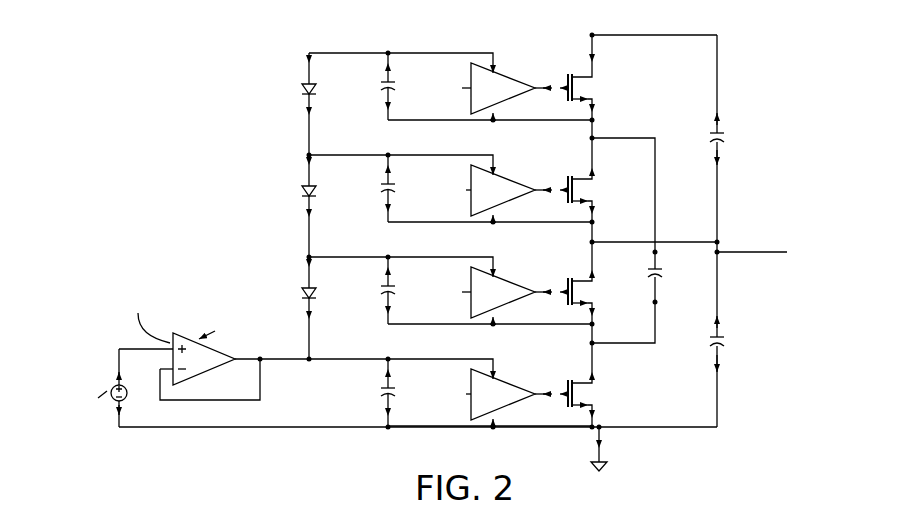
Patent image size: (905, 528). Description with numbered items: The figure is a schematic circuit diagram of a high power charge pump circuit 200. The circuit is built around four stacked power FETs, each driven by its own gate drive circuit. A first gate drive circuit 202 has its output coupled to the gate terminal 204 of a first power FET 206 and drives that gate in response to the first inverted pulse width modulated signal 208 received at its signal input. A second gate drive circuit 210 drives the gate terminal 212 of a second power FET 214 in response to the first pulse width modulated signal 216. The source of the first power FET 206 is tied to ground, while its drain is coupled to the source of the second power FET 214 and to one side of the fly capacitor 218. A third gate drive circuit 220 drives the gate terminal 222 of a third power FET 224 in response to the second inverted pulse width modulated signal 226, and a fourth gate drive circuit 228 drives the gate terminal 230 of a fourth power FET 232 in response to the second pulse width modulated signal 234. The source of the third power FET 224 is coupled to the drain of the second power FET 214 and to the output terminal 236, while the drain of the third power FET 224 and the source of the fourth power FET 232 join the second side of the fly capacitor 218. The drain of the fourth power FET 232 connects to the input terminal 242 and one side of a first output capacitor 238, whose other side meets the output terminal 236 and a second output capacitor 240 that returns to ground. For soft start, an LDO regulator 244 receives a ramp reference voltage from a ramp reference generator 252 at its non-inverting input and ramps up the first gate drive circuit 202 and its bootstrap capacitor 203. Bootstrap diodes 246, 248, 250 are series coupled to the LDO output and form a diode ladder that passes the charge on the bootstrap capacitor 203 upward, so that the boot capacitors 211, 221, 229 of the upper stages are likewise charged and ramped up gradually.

The high power charge pump circuit 200 is at (188, 52).
The first gate drive circuit 202 is at (500, 377).
The bootstrap capacitor 203 is at (415, 378).
The gate terminal 204 is at (553, 371).
The first power FET 206 is at (615, 384).
The first PWMN signal 208 is at (489, 408).
The second gate drive circuit 210 is at (498, 275).
The boot capacitor 211 is at (415, 276).
The gate terminal 212 is at (553, 269).
The second power FET 214 is at (613, 283).
The first PWM signal 216 is at (490, 306).
The fly capacitor 218 is at (658, 278).
The third gate drive circuit 220 is at (500, 173).
The boot capacitor 221 is at (415, 174).
The gate terminal 222 is at (553, 167).
The third power FET 224 is at (613, 180).
The second PWMN signal 226 is at (490, 204).
The fourth gate drive circuit 228 is at (500, 82).
The boot capacitor 229 is at (390, 77).
The gate terminal 230 is at (563, 80).
The fourth power FET 232 is at (597, 77).
The second PWM signal 234 is at (437, 95).
The output terminal 236 is at (720, 254).
The first output capacitor 238 is at (718, 128).
The second output capacitor 240 is at (720, 338).
The input terminal 242 is at (597, 35).
The LDO regulator 244 is at (138, 262).
The bootstrap diode 246 is at (318, 299).
The bootstrap diode 248 is at (318, 197).
The bootstrap diode 250 is at (318, 95).
The ramp reference generator 252 is at (117, 413).